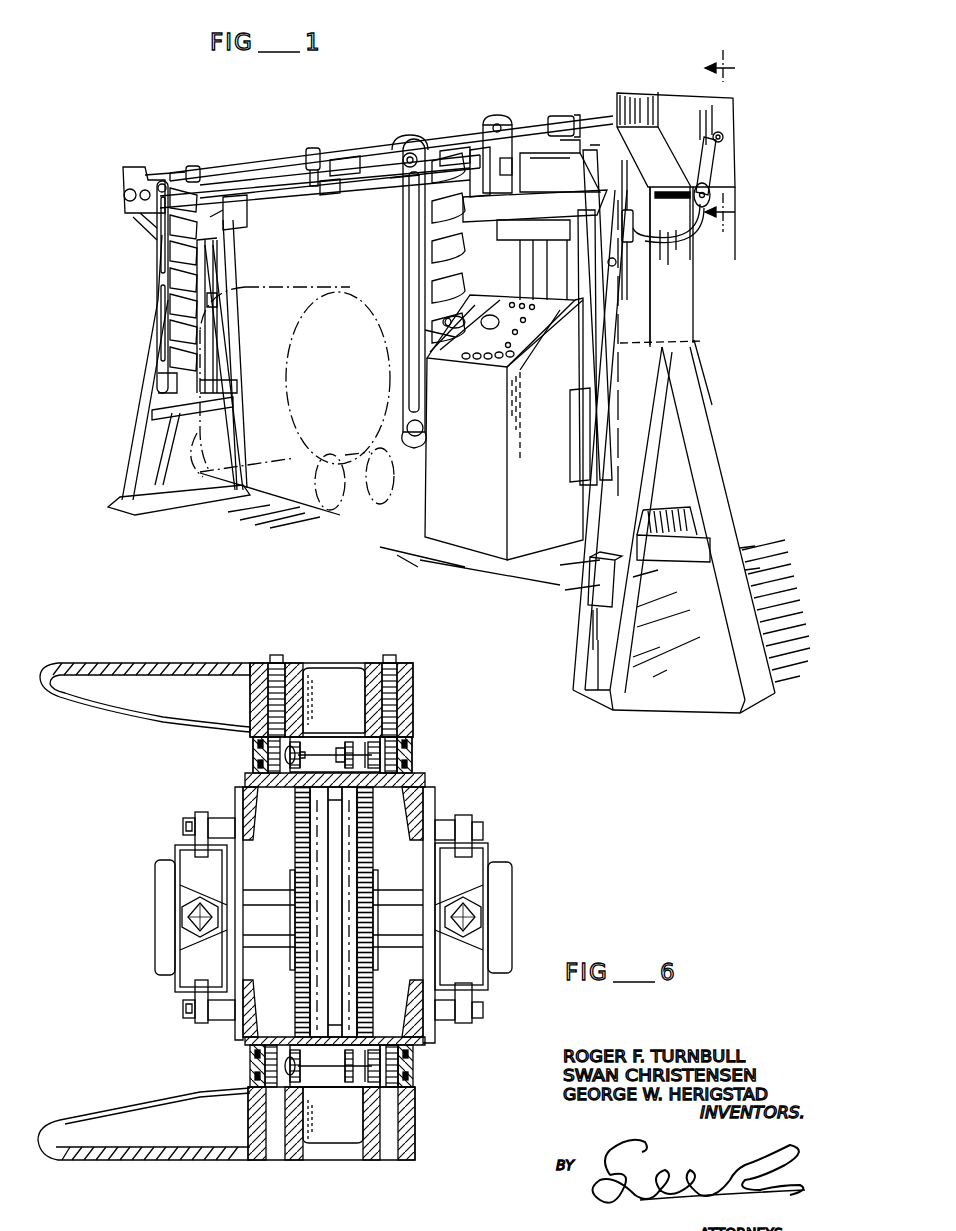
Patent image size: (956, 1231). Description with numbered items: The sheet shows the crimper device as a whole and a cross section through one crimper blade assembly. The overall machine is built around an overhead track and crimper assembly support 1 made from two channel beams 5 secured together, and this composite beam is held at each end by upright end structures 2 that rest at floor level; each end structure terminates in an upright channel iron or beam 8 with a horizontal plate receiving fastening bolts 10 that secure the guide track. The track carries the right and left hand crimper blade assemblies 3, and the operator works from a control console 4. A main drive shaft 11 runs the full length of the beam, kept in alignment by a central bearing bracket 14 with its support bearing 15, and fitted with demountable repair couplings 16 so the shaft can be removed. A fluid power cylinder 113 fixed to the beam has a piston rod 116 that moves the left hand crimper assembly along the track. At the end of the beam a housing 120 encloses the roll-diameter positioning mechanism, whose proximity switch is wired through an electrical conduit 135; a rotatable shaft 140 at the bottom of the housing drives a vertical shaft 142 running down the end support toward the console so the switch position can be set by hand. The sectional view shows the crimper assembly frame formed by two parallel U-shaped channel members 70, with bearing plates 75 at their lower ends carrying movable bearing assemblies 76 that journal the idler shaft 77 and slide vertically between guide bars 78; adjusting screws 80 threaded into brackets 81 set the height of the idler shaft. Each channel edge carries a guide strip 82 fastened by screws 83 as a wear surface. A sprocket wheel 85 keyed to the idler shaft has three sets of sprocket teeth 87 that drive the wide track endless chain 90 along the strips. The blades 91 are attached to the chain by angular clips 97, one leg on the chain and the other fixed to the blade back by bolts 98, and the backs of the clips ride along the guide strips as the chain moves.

In FIG. 1, the overhead track and crimper assembly support 1 is at (392, 128).
In FIG. 1, the upright end structures 2 is at (128, 394).
In FIG. 1, the crimper blade assemblies 3 is at (158, 285).
In FIG. 1, the control console 4 is at (428, 516).
In FIG. 1, the channel beams 5 is at (374, 190).
In FIG. 1, the upright channel iron or beam 8 is at (515, 278).
In FIG. 1, the fastening bolts 10 is at (720, 143).
In FIG. 1, the main drive shaft 11 is at (356, 148).
In FIG. 1, the central bearing bracket 14 is at (330, 189).
In FIG. 1, the support bearing 15 is at (310, 150).
In FIG. 1, the demountable repair couplings 16 is at (194, 166).
In FIG. 1, the fluid power cylinder 113 is at (397, 150).
In FIG. 1, the piston rod 116 is at (250, 166).
In FIG. 1, the housing 120 is at (678, 98).
In FIG. 1, the electrical conduit 135 is at (685, 232).
In FIG. 1, the rotatable shaft 140 is at (678, 194).
In FIG. 1, the vertical shaft 142 is at (610, 264).
In FIG. 6, the U-shaped channel members 70 is at (408, 795).
In FIG. 6, the bearing plates 75 is at (240, 800).
In FIG. 6, the movable bearing assemblies 76 is at (185, 862).
In FIG. 6, the idler shaft 77 is at (333, 912).
In FIG. 6, the guide bars 78 is at (200, 818).
In FIG. 6, the adjusting screws 80 is at (190, 920).
In FIG. 6, the brackets 81 is at (180, 940).
In FIG. 6, the guide strip 82 is at (250, 745).
In FIG. 6, the screws 83 is at (412, 742).
In FIG. 6, the sprocket wheel 85 is at (290, 880).
In FIG. 6, the sprocket teeth 87 is at (295, 826).
In FIG. 6, the wide track endless chain 90 is at (337, 713).
In FIG. 6, the blades 91 is at (182, 672).
In FIG. 6, the clips 97 is at (368, 738).
In FIG. 6, the bolts 98 is at (278, 665).